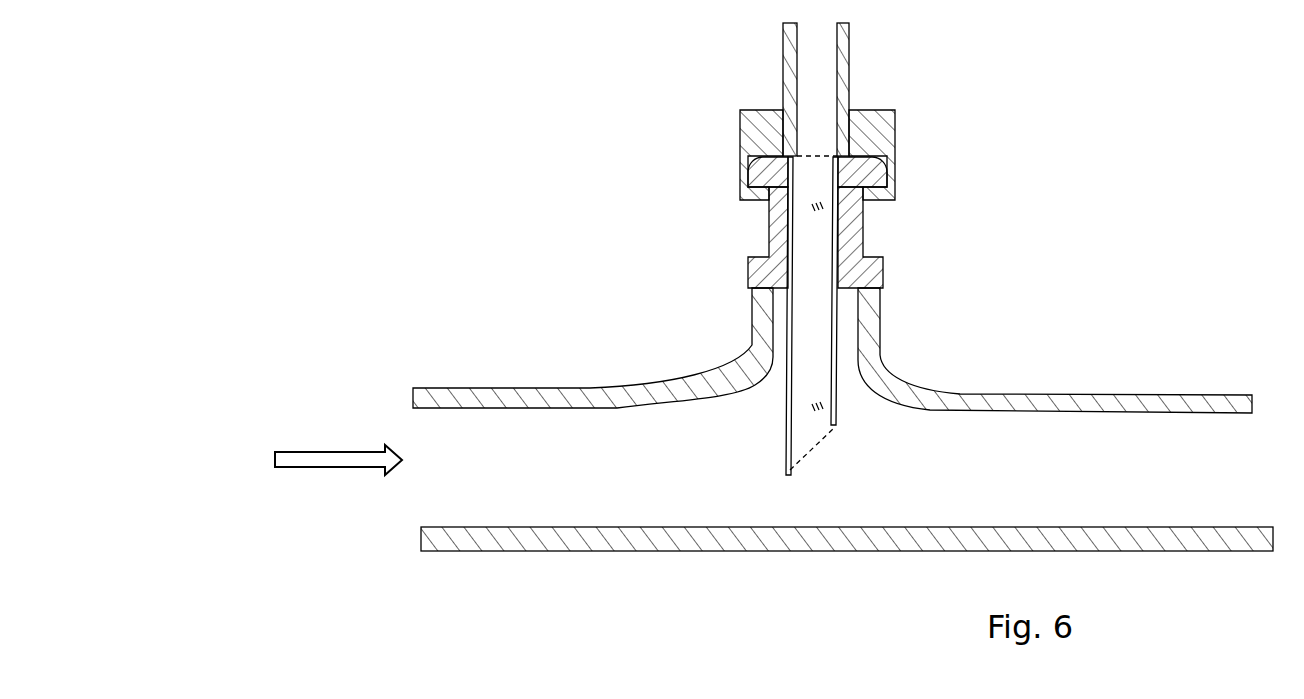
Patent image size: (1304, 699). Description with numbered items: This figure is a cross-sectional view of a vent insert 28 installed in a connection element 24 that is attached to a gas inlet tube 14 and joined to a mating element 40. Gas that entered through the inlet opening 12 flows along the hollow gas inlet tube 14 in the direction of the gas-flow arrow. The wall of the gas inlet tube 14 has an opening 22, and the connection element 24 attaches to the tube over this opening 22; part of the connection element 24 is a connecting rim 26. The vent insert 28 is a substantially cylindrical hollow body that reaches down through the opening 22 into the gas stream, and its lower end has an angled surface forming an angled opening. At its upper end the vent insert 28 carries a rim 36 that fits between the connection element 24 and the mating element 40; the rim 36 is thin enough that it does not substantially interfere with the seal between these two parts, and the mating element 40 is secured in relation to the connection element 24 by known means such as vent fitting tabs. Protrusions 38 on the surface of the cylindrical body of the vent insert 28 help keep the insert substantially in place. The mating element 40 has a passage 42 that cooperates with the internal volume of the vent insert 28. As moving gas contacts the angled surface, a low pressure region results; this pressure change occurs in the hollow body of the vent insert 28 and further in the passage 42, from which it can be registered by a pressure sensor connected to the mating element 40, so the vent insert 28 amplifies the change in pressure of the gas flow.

The inlet opening 12 is at (383, 403).
The gas inlet tube 14 is at (503, 385).
The opening 22 is at (852, 370).
The connection element 24 is at (758, 248).
The connecting rim 26 is at (872, 178).
The vent insert 28 is at (800, 212).
The rim 36 is at (850, 153).
The protrusions 38 is at (847, 232).
The mating element 40 is at (758, 110).
The passage 42 is at (820, 65).